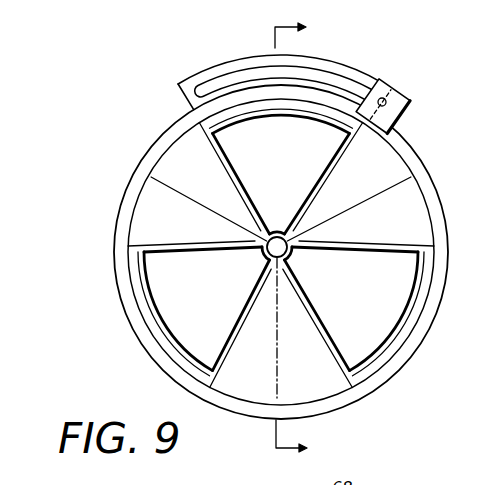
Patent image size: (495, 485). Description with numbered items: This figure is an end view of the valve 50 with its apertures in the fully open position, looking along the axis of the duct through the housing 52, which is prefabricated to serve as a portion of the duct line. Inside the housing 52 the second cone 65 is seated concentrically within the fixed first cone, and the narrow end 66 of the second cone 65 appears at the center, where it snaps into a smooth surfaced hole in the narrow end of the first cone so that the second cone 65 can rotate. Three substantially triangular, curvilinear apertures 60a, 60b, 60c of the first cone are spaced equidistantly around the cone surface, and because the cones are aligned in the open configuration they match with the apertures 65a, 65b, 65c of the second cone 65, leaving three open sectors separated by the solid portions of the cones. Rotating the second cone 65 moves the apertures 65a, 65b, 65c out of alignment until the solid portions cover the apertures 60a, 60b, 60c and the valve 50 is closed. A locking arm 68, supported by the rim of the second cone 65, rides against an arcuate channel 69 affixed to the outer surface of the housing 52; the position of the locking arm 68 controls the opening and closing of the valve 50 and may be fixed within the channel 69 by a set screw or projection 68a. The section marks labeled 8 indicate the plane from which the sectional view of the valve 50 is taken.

The section line 8- 8 is at (185, 53).
The valve 50 is at (407, 196).
The housing 52 is at (133, 170).
The second cone 65 is at (146, 202).
The narrow end of the second cone 66 is at (148, 231).
The arcuate channel 69 is at (348, 74).
The locking arm 68 is at (395, 88).
The set screw or projection 68a is at (386, 101).
The aperture 60a is at (368, 320).
The aperture 65a is at (373, 320).
The aperture 60b is at (341, 171).
The aperture 65b is at (323, 153).
The aperture 60c is at (143, 314).
The aperture 65c is at (163, 300).